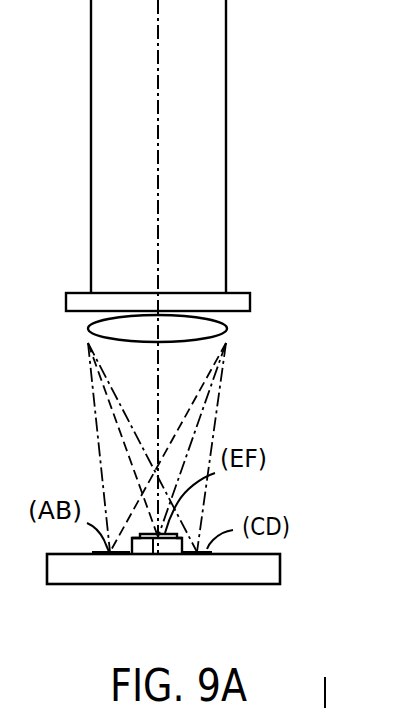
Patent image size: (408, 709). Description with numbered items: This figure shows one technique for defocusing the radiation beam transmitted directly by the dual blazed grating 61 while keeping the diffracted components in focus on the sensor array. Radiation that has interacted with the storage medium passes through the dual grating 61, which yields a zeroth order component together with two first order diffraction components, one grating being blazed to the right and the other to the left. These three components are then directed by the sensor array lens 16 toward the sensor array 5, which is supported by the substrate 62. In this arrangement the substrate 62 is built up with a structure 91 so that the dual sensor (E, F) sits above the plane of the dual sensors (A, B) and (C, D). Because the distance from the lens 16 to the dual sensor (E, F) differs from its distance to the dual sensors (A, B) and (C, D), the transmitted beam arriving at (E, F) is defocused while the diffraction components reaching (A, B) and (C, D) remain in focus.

The dual blazed grating 61 is at (251, 301).
The sensor array lens 16 is at (227, 328).
The sensor array 5 is at (116, 585).
The structure 91 is at (187, 542).
The substrate 62 is at (281, 571).